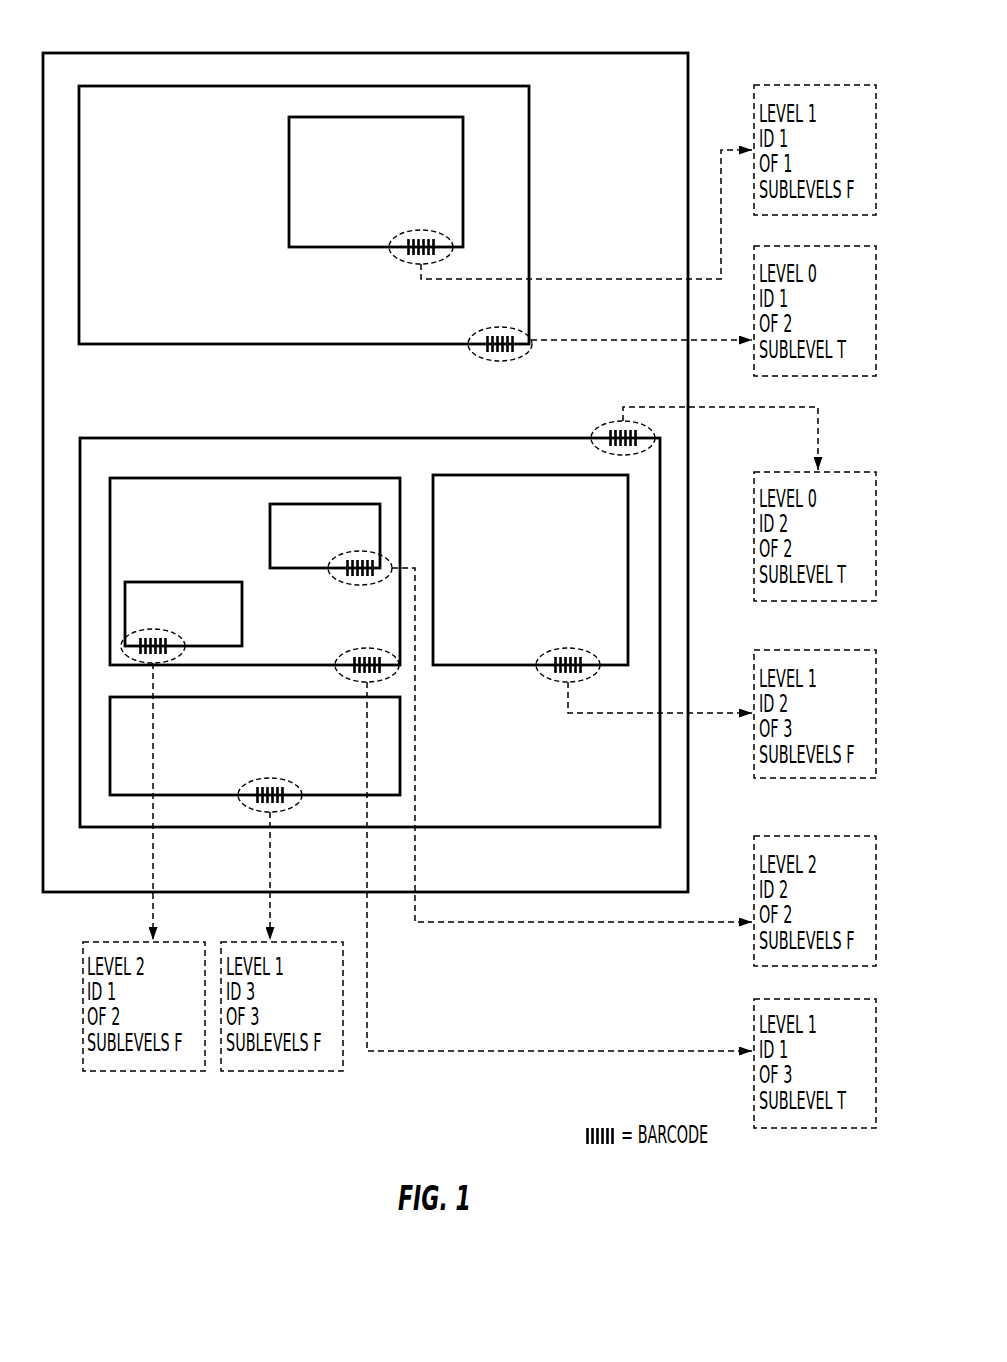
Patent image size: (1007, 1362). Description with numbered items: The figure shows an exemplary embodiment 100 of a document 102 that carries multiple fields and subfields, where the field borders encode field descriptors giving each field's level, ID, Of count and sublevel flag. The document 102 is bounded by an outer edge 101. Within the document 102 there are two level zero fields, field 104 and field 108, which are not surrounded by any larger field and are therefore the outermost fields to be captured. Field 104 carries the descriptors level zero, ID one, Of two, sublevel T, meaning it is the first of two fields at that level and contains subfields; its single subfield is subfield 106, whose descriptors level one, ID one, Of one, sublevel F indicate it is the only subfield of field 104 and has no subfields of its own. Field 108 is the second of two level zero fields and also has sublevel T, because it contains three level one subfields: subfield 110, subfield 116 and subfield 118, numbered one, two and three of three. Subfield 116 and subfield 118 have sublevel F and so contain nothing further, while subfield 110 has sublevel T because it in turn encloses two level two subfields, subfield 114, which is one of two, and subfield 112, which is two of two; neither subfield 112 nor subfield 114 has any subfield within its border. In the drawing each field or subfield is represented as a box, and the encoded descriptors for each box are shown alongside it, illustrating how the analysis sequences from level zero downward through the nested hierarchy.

The exemplary embodiment 100 is at (365, 451).
The outer edge 101 is at (521, 47).
The document 102 is at (415, 208).
The field 104 is at (157, 327).
The subfield 106 is at (347, 153).
The field 108 is at (152, 471).
The subfield 110 is at (165, 517).
The subfield 112 is at (313, 536).
The subfield 114 is at (165, 614).
The subfield 116 is at (502, 515).
The subfield 118 is at (282, 746).